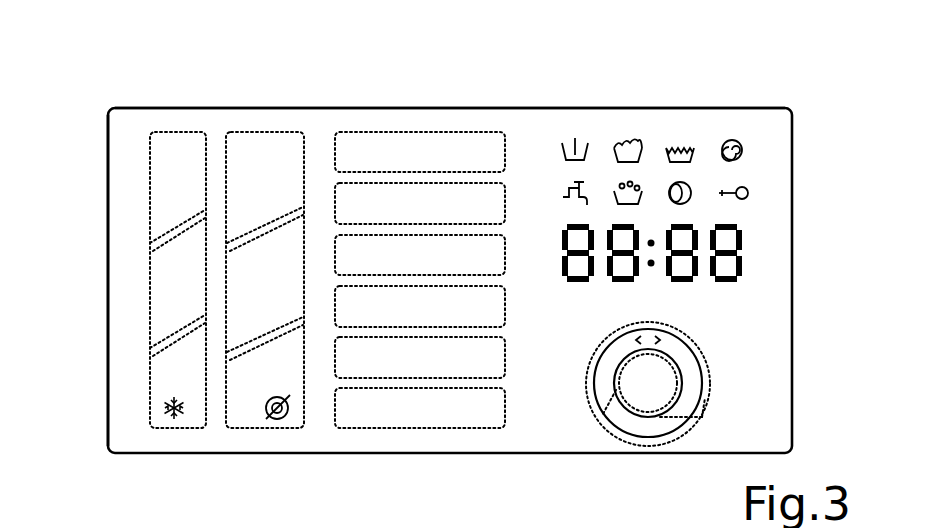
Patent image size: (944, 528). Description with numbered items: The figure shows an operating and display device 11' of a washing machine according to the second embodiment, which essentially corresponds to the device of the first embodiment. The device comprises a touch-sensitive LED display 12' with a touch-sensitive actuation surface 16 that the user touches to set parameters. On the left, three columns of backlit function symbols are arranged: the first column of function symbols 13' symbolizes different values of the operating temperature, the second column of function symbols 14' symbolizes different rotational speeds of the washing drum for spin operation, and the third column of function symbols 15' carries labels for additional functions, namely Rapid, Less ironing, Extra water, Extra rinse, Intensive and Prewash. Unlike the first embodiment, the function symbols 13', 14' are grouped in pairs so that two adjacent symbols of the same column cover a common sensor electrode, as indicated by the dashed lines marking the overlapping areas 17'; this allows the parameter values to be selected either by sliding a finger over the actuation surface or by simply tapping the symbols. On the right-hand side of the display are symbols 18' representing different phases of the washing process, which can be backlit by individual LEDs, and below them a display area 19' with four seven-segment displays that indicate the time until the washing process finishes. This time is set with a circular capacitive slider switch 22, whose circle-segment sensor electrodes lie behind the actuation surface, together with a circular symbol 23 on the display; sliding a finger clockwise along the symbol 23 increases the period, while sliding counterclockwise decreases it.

The operating and display device 11' is at (423, 227).
The LED display 12' is at (450, 65).
The function symbols 13' is at (178, 332).
The function symbols 14' is at (265, 332).
The function symbols 15' is at (420, 330).
The actuation surface 16 is at (128, 280).
The overlapping areas 17' is at (181, 227).
The symbols 18' is at (708, 148).
The display area 19' is at (706, 268).
The circular capacitive slider switch 22 is at (714, 377).
The symbol 23 is at (707, 398).